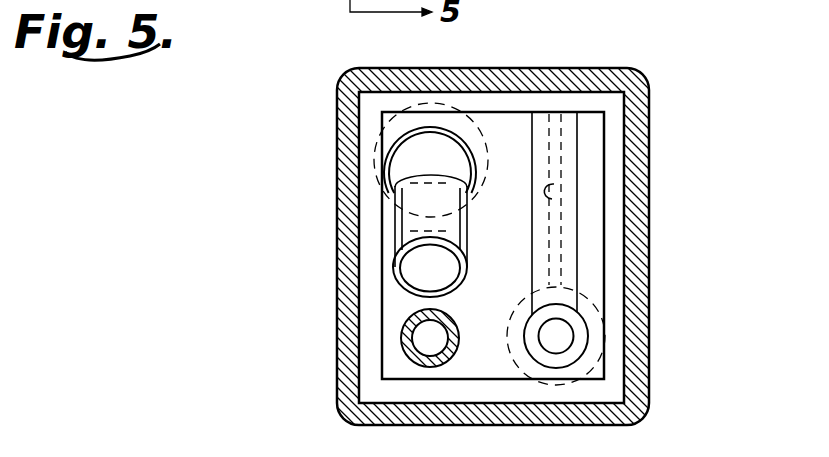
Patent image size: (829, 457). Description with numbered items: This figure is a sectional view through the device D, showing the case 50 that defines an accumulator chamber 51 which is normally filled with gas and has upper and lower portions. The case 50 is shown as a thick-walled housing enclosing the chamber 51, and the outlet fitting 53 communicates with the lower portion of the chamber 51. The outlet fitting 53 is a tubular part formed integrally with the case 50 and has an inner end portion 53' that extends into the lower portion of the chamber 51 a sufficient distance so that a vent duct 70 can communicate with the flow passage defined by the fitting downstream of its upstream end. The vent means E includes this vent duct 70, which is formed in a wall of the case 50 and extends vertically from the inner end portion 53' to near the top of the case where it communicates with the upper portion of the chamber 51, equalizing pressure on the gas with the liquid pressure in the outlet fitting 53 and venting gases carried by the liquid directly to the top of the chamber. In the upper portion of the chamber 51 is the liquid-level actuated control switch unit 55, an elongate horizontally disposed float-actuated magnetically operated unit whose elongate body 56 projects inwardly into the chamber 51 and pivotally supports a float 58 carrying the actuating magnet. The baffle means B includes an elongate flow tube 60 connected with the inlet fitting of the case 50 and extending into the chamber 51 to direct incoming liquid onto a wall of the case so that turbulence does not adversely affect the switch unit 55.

The case 50 is at (523, 40).
The accumulator chamber 51 is at (502, 137).
The outlet fitting 53 is at (614, 336).
The inner end portion of the outlet fitting 53' is at (613, 320).
The control switch unit 55 is at (388, 215).
The body 56 is at (428, 138).
The float 58 is at (410, 233).
The flow tube 60 is at (410, 350).
The vent duct 70 is at (558, 197).
The device D is at (328, 87).
The vent means E is at (588, 150).
The baffle means B is at (386, 333).